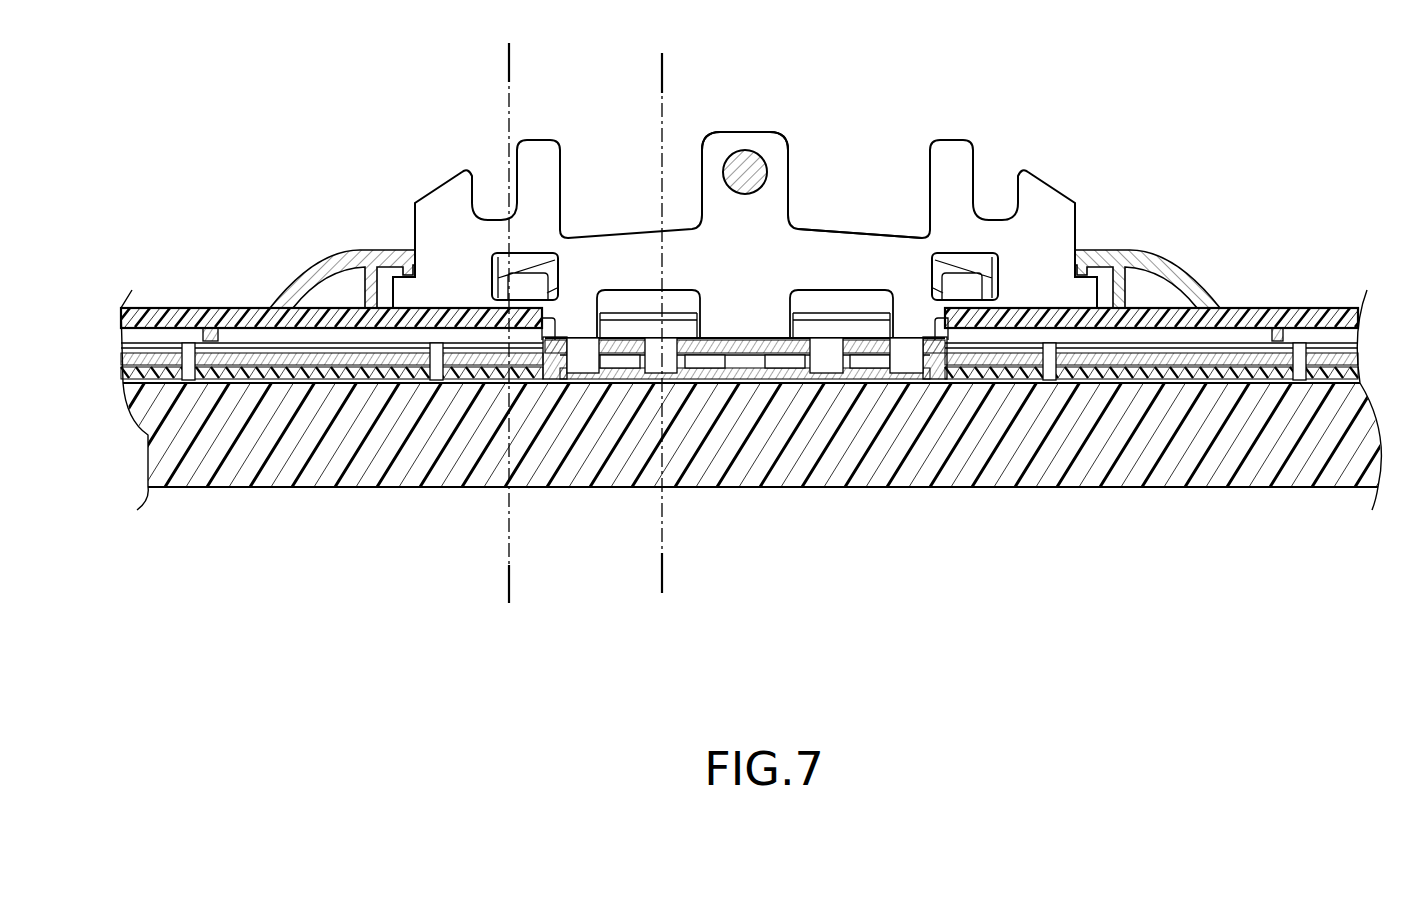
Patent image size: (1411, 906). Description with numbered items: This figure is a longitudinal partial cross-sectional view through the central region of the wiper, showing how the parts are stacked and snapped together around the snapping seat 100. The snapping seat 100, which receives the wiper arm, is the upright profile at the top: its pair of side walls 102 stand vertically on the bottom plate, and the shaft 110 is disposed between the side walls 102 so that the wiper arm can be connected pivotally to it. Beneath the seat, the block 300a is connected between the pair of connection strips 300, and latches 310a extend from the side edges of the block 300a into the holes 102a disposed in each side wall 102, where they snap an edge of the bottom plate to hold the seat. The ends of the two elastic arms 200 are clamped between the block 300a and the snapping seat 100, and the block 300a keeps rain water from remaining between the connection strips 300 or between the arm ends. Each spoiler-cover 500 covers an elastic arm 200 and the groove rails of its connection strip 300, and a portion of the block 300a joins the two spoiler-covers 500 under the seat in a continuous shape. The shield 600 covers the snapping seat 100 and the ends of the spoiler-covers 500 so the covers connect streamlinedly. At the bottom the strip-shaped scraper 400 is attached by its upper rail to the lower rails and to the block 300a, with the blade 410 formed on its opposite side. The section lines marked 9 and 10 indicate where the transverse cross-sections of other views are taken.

The section line 9- 9 is at (509, 585).
The section line 10- 10 is at (662, 572).
The snapping seat 100 is at (1052, 173).
The side wall 102 is at (890, 263).
The hole 102a is at (677, 302).
The shaft 110 is at (748, 173).
The elastic arm 200 is at (1233, 360).
The connection strip 300 is at (1018, 370).
The block 300a is at (730, 370).
The latch 310a is at (680, 328).
The scraper 400 is at (1263, 488).
The blade 410 is at (1162, 465).
The spoiler-cover 500 is at (1162, 313).
The shield 600 is at (1127, 253).